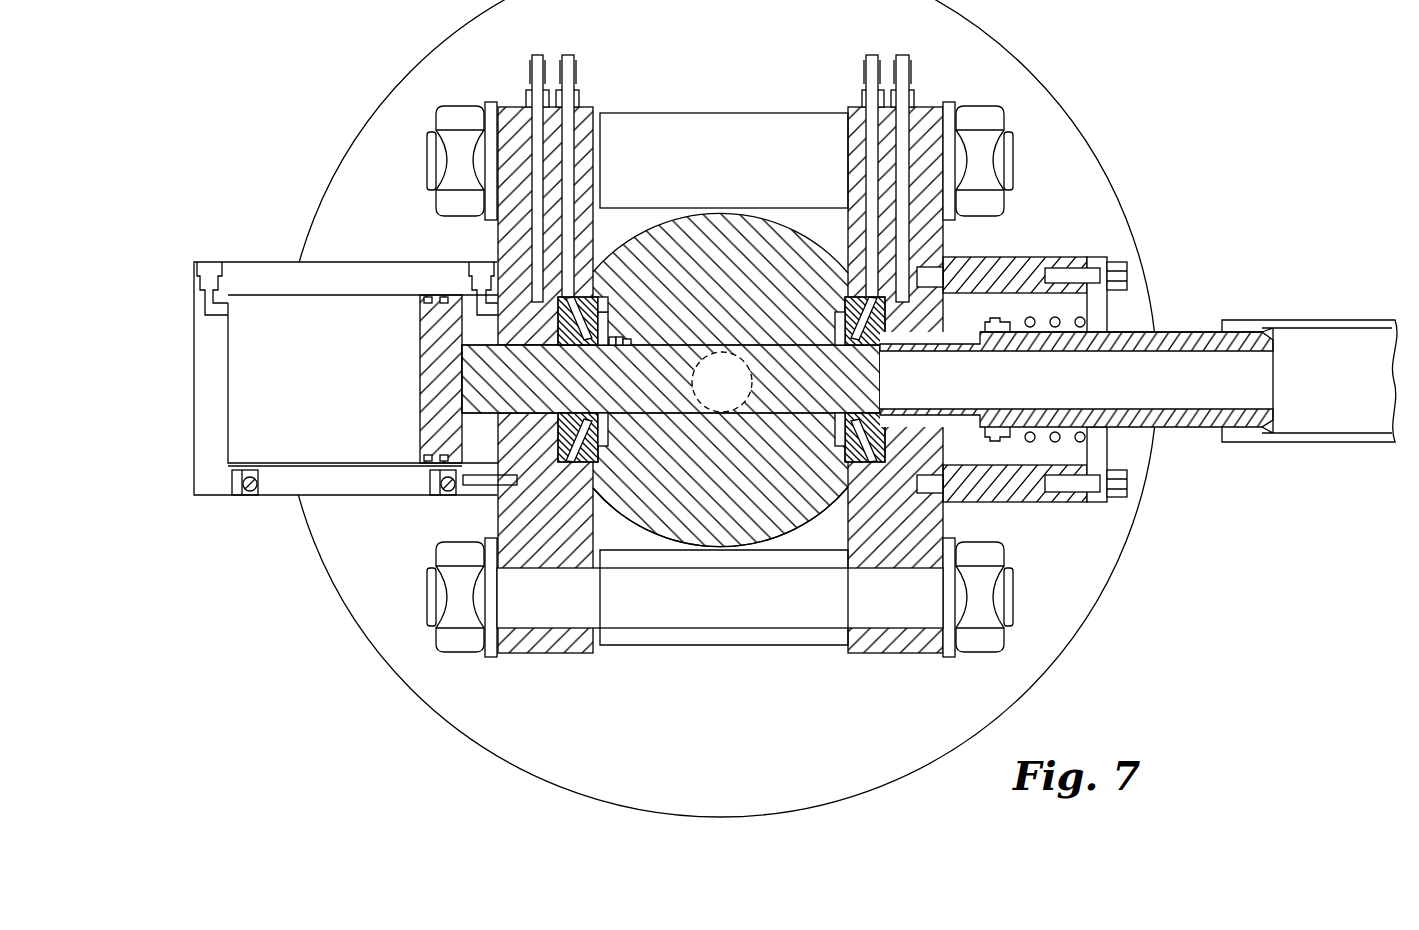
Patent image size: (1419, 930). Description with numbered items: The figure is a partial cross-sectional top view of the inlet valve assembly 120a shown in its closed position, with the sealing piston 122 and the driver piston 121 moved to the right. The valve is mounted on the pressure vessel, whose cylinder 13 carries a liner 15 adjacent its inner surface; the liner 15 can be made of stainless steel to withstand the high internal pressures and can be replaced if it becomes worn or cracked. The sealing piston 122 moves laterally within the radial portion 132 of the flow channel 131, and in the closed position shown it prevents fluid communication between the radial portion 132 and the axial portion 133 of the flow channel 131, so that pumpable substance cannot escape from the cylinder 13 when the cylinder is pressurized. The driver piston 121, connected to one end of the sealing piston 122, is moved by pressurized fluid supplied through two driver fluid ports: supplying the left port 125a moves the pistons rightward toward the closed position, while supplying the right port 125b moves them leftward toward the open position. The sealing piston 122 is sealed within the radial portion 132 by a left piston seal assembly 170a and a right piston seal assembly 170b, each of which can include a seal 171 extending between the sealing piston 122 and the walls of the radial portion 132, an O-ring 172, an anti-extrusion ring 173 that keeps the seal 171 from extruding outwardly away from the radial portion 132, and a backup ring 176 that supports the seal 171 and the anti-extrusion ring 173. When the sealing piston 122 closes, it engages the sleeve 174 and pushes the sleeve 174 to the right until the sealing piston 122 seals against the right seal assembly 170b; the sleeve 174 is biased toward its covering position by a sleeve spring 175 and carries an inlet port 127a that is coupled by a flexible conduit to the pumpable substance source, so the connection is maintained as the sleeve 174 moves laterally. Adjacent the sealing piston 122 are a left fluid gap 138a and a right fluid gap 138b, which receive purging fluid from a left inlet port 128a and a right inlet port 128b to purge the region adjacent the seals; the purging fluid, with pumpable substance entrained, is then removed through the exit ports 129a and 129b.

The cylinder 13 is at (1121, 208).
The liner 15 is at (634, 524).
The inlet valve assembly 120a is at (396, 150).
The driver piston 121 is at (426, 398).
The sealing piston 122 is at (702, 410).
The left port 125a is at (212, 268).
The right port 125b is at (482, 268).
The inlet port 127a is at (1275, 380).
The left inlet port 128a is at (574, 66).
The right inlet port 128b is at (908, 66).
The exit port 129a is at (533, 64).
The exit port 129b is at (868, 64).
The flow channel 131 is at (768, 366).
The radial portion 132 is at (1168, 392).
The axial portion 133 is at (726, 352).
The left fluid gap 138a is at (600, 453).
The right fluid gap 138b is at (840, 453).
The left piston seal assembly 170a is at (663, 306).
The right piston seal assembly 170b is at (816, 281).
The seal 171 is at (619, 342).
The O-ring 172 is at (626, 343).
The anti-extrusion ring 173 is at (613, 342).
The sleeve 174 is at (1208, 338).
The sleeve spring 175 is at (1030, 318).
The backup ring 176 is at (606, 342).